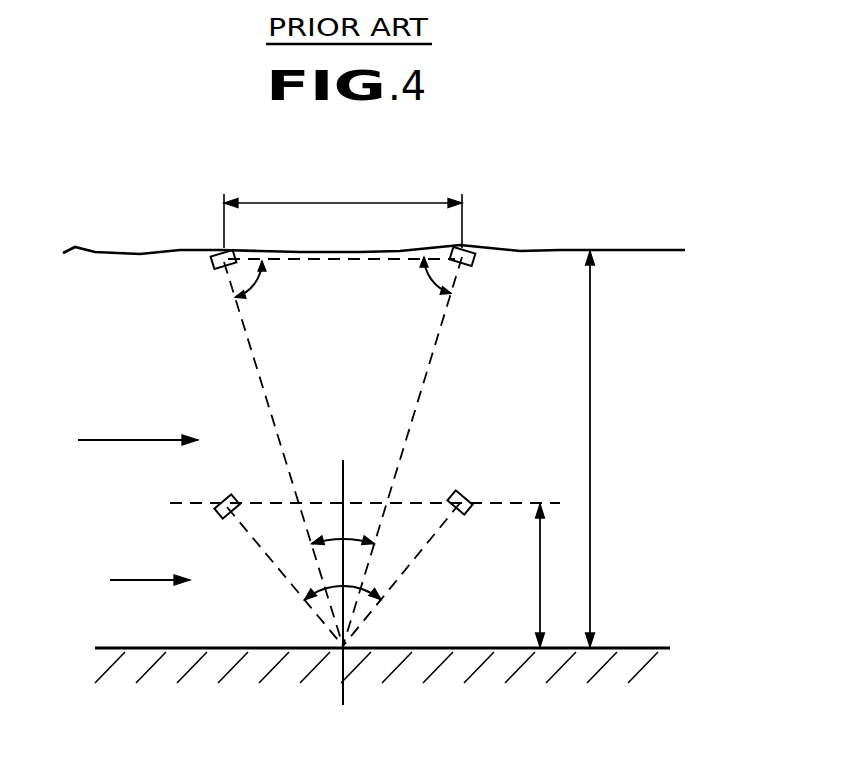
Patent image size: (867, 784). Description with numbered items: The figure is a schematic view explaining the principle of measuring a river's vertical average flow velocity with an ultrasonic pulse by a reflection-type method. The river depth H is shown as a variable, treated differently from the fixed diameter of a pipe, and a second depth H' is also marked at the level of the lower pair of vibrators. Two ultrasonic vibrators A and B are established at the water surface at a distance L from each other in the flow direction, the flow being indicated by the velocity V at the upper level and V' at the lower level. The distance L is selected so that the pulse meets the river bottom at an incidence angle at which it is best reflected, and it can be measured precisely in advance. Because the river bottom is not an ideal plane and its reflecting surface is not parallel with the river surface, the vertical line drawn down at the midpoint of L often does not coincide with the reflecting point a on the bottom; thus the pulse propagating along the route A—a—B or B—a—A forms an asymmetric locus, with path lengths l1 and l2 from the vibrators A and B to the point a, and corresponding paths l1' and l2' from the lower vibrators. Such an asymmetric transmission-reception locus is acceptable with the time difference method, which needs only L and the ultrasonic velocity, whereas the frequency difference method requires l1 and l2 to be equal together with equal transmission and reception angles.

The ultrasonic vibrator A is at (218, 369).
The ultrasonic vibrator B is at (467, 363).
The distance between ultrasonic vibrators L is at (343, 209).
The river depth H is at (575, 449).
The depth of lower transducers H' is at (526, 575).
The flow velocity V is at (138, 421).
The flow velocity at lower level V' is at (150, 565).
The reflecting point a is at (340, 596).
The propagation path length l1 is at (283, 454).
The propagation path length l2 is at (402, 451).
The sound path from lower A l1' is at (285, 576).
The sound path from lower B l2' is at (401, 574).